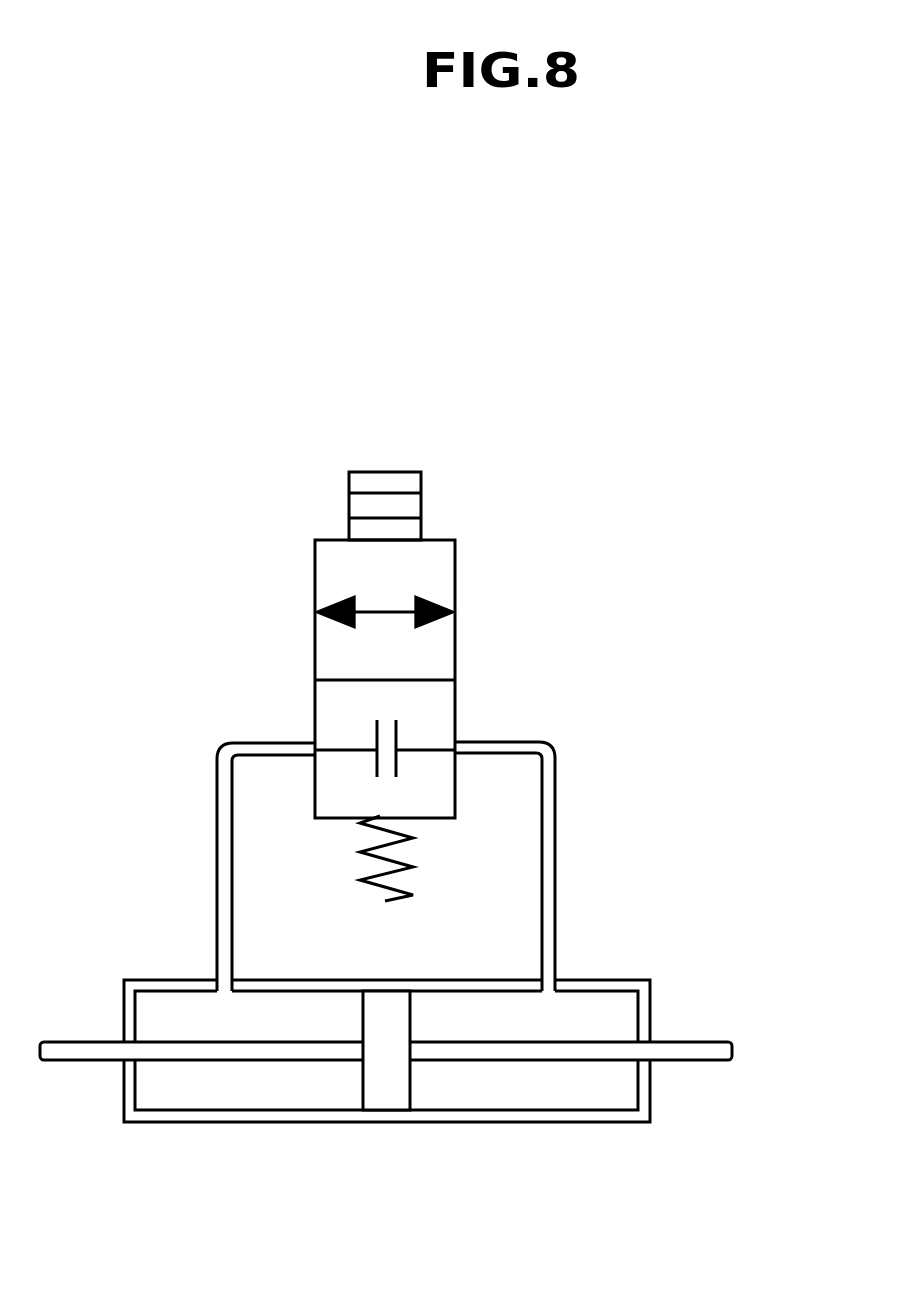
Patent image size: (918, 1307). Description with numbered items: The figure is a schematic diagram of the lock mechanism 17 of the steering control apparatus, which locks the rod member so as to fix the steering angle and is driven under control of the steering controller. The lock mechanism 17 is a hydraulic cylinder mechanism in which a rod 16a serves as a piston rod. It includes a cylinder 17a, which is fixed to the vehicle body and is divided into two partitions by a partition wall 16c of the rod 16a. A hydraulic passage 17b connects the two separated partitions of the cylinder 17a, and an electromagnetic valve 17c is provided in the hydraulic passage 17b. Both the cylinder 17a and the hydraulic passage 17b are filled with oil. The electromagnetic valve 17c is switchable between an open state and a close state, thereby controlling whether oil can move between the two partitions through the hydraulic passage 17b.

The lock mechanism 17 is at (722, 560).
The cylinder 17a is at (600, 978).
The hydraulic passage 17b is at (555, 792).
The electromagnetic valve 17c is at (455, 648).
The rod 16a is at (680, 1052).
The partition wall 16c is at (388, 1082).